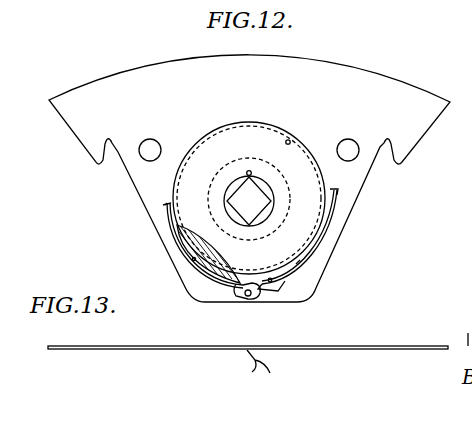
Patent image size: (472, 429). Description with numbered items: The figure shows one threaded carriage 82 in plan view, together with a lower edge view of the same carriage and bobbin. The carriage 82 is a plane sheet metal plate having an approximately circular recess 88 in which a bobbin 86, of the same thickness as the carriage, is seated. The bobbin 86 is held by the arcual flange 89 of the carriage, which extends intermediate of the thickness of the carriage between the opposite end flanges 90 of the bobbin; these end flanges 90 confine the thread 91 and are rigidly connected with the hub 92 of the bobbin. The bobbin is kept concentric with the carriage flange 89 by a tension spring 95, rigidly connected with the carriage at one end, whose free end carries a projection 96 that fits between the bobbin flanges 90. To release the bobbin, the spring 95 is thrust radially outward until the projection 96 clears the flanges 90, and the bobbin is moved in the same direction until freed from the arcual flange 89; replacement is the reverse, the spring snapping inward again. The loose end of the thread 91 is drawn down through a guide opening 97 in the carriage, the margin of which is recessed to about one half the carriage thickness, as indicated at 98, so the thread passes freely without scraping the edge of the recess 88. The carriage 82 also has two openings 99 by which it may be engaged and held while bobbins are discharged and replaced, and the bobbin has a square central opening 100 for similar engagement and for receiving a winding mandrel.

In FIG. 12, the carriage 82 is at (249, 178).
In FIG. 13, the carriage 82 is at (143, 346).
In FIG. 12, the bobbin 86 is at (249, 198).
In FIG. 12, the recess 88 is at (165, 225).
In FIG. 12, the arcual flange 89 is at (288, 140).
In FIG. 12, the end flanges 90 is at (194, 261).
In FIG. 12, the thread 91 is at (194, 228).
In FIG. 13, the thread 91 is at (254, 369).
In FIG. 12, the hub 92 is at (228, 197).
In FIG. 12, the tension spring 95 is at (296, 264).
In FIG. 12, the projection 96 is at (270, 278).
In FIG. 12, the guide opening 97 is at (247, 297).
In FIG. 12, the recessed margin 98 is at (240, 287).
In FIG. 12, the openings 99 is at (149, 149).
In FIG. 12, the central opening 100 is at (249, 201).